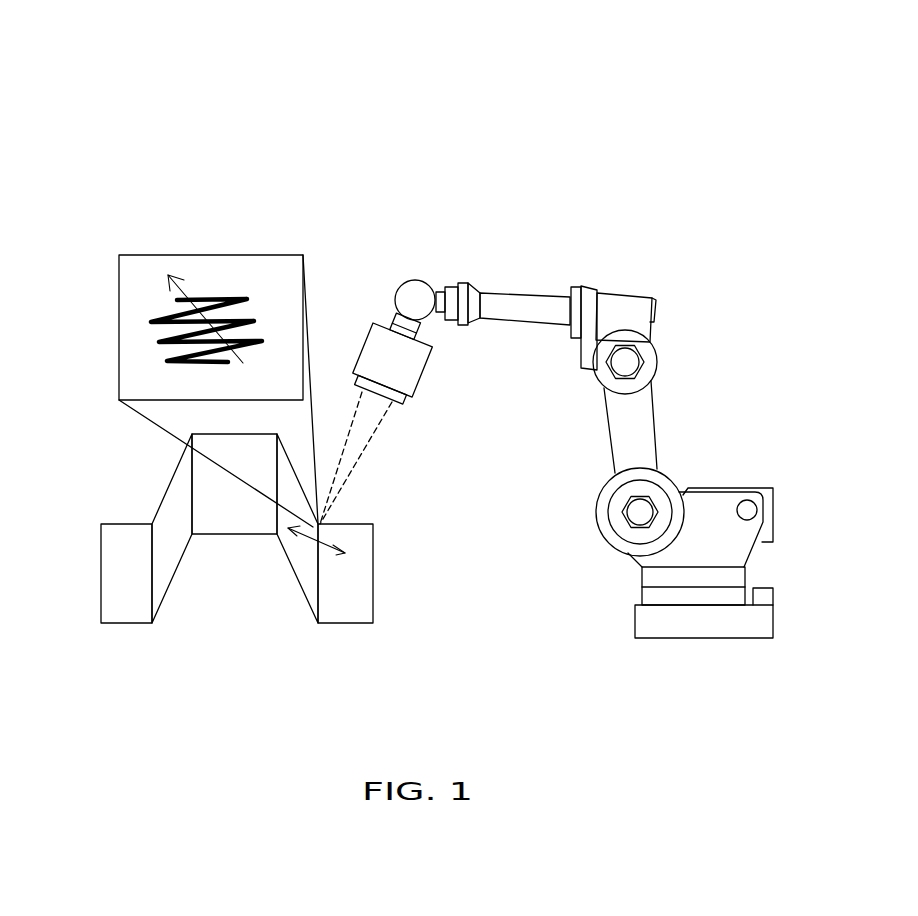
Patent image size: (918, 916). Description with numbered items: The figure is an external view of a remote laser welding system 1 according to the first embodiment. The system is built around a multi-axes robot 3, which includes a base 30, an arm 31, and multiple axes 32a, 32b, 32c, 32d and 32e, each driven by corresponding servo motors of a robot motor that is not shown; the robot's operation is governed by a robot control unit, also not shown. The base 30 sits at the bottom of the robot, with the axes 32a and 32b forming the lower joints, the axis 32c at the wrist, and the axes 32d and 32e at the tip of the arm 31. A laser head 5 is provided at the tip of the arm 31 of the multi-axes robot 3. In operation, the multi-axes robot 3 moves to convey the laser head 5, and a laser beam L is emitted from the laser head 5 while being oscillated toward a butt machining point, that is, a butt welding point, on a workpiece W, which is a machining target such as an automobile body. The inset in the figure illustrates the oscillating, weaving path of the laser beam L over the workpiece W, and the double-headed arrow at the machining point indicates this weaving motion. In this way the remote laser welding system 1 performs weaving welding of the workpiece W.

The remote laser welding system 1 is at (690, 78).
The multi-axes robot 3 is at (700, 255).
The laser head 5 is at (413, 372).
The base 30 is at (711, 628).
The arm 31 is at (548, 258).
The axis 32a is at (672, 478).
The axis 32b is at (657, 357).
The axis 32c is at (620, 290).
The axis 32d is at (428, 282).
The axis 32e is at (392, 313).
The workpiece W is at (166, 518).
The laser beam L is at (367, 443).